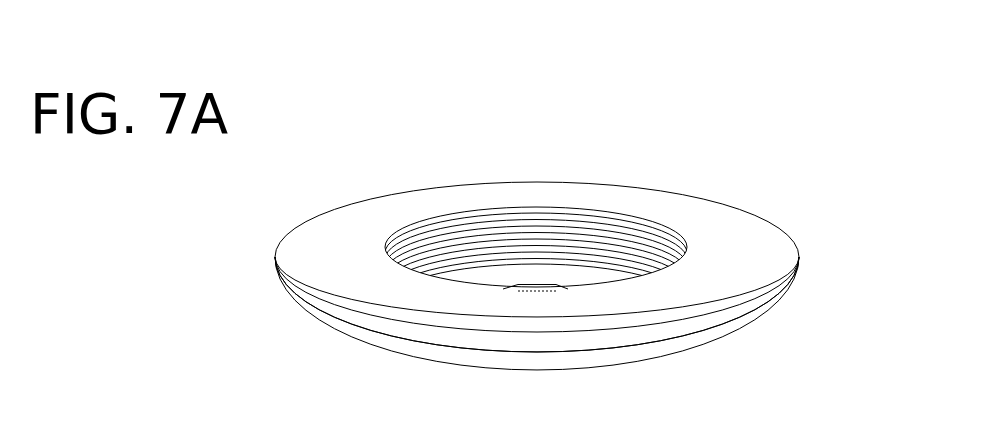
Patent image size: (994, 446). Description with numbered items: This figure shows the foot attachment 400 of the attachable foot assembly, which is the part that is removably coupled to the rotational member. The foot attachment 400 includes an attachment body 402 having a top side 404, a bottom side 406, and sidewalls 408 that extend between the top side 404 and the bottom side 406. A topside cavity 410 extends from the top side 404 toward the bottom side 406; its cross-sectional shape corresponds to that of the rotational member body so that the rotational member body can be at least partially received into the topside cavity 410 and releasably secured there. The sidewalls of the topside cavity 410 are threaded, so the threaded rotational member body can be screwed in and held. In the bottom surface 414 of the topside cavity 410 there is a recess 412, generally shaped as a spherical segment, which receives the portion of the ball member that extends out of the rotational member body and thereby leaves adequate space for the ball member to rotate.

The foot attachment 400 is at (284, 70).
The attachment body 402 is at (190, 348).
The top side 404 is at (685, 214).
The bottom side 406 is at (523, 373).
The sidewalls 408 is at (276, 266).
The topside cavity 410 is at (583, 240).
The recess 412 is at (535, 283).
The bottom surface 414 is at (467, 273).